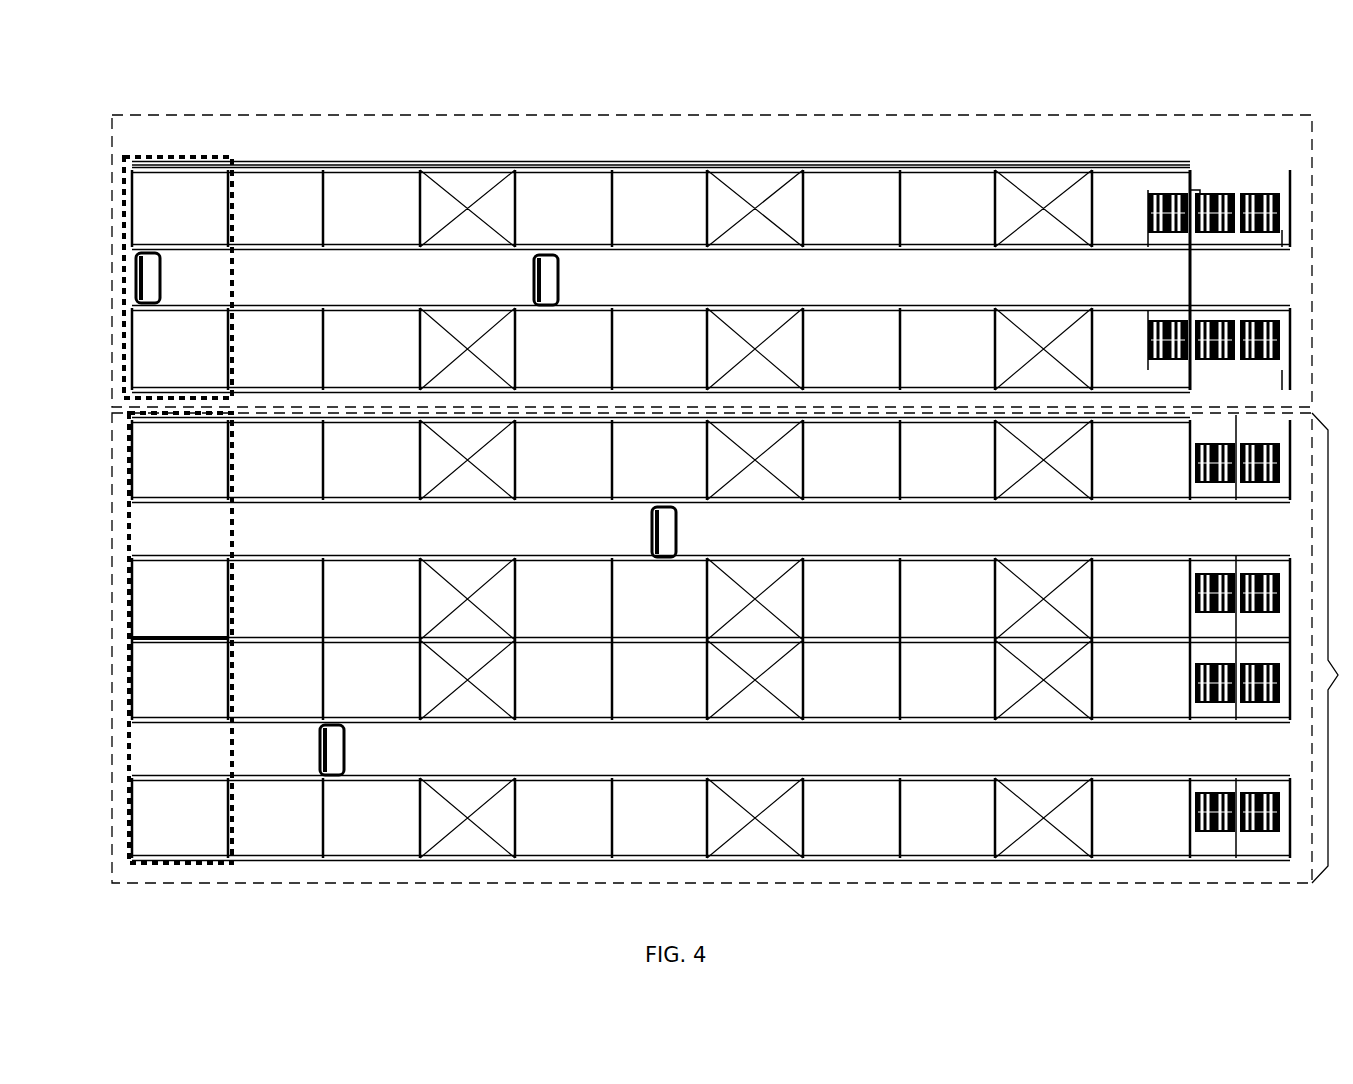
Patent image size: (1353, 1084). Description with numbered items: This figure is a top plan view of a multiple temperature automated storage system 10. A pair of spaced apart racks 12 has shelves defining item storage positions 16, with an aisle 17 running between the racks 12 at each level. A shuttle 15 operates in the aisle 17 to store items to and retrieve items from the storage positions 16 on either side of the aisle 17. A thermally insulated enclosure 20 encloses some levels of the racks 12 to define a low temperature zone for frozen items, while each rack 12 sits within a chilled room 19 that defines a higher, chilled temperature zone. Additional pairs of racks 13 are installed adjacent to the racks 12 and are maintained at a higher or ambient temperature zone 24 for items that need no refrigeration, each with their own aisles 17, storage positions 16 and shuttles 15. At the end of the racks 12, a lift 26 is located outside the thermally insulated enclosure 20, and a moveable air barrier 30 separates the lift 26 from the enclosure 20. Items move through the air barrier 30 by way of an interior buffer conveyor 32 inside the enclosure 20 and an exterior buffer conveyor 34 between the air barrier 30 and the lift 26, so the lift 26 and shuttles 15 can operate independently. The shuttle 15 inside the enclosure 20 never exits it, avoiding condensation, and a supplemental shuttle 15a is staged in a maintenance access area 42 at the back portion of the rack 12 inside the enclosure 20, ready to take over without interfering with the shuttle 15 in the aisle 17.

The multiple temperature automated storage system 10 is at (1322, 126).
The racks 12 is at (116, 205).
The additional pairs of racks 13 is at (116, 462).
The shuttle 15 is at (550, 272).
The supplemental shuttle 15a is at (158, 278).
The item storage positions 16 is at (306, 232).
The aisle 17 is at (106, 278).
The chilled room 19 is at (327, 112).
The thermally insulated enclosure 20 is at (850, 160).
The ambient temperature zone 24 is at (732, 648).
The lift 26 is at (1258, 188).
The air barrier 30 is at (1190, 170).
The interior buffer conveyor 32 is at (1148, 215).
The exterior buffer conveyor 34 is at (1210, 192).
The maintenance access area 42 is at (194, 150).